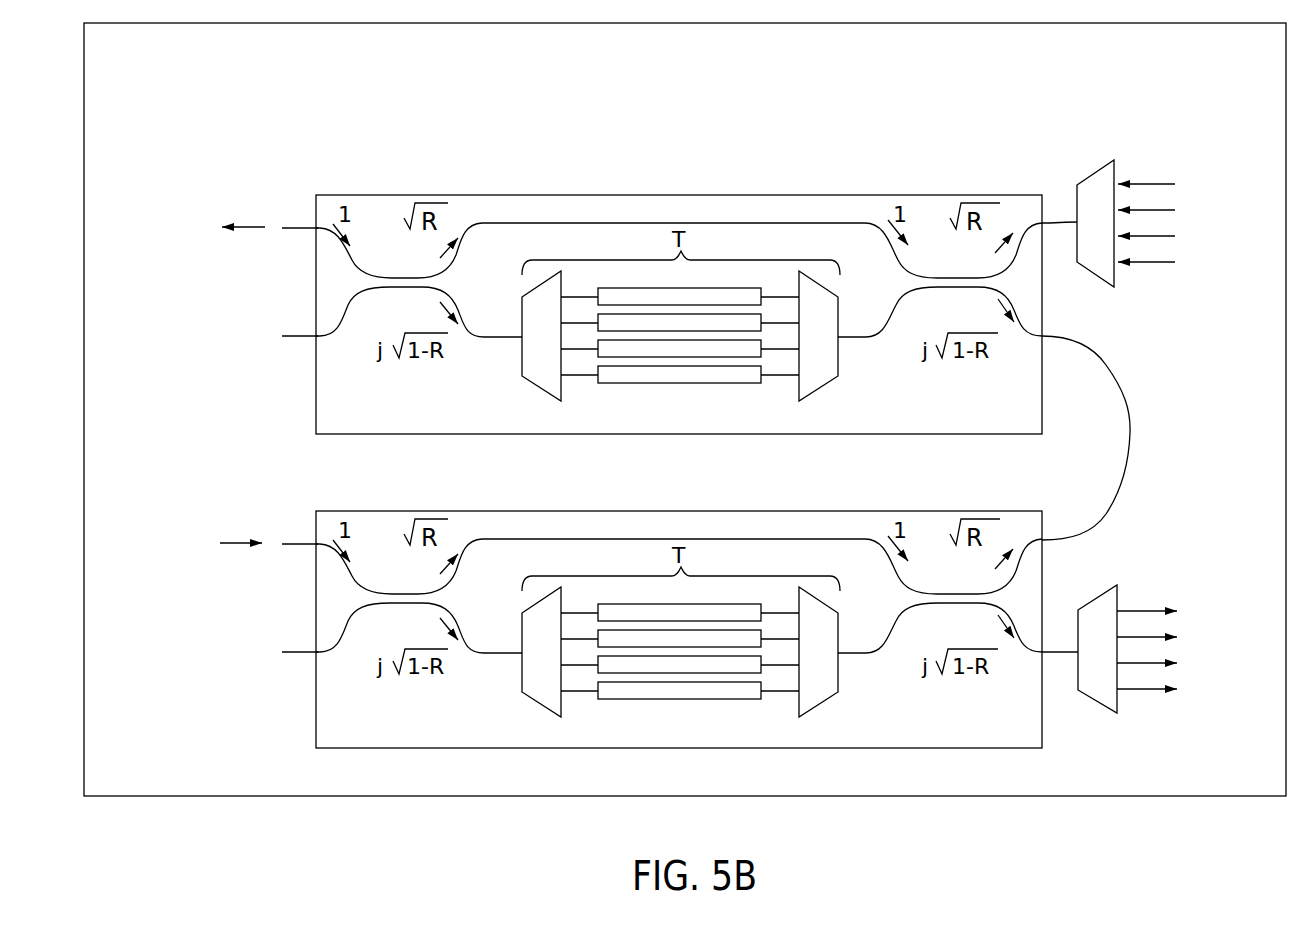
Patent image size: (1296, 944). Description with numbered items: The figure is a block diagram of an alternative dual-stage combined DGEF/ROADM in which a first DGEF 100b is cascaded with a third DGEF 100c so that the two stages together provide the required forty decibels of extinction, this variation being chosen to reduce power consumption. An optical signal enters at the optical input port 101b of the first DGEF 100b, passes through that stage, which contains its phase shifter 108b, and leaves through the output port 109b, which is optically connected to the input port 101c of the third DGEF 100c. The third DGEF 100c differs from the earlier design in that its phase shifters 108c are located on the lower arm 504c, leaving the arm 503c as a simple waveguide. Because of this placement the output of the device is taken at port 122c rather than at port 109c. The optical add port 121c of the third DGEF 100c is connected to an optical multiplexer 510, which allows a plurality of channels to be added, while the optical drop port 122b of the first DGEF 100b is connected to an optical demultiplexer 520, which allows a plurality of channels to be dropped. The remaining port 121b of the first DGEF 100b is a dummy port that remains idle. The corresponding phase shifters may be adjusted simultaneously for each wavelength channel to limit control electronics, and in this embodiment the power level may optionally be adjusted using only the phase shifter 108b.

The first DGEF 100b is at (960, 510).
The third DGEF 100c is at (688, 194).
The optical input port 101b is at (310, 543).
The input port 101c is at (1025, 333).
The phase shifter 108b is at (684, 702).
The phase shifters 108c is at (687, 386).
The output port 109b is at (1031, 550).
The port 109c is at (302, 340).
The dummy optical port 121b is at (303, 652).
The optical add port 121c is at (1065, 222).
The optical drop port 122b is at (1033, 650).
The output port 122c is at (303, 230).
The arm 503c is at (878, 230).
The lower arm 504c is at (875, 338).
The optical multiplexer 510 is at (1100, 167).
The optical demultiplexer 520 is at (1085, 693).